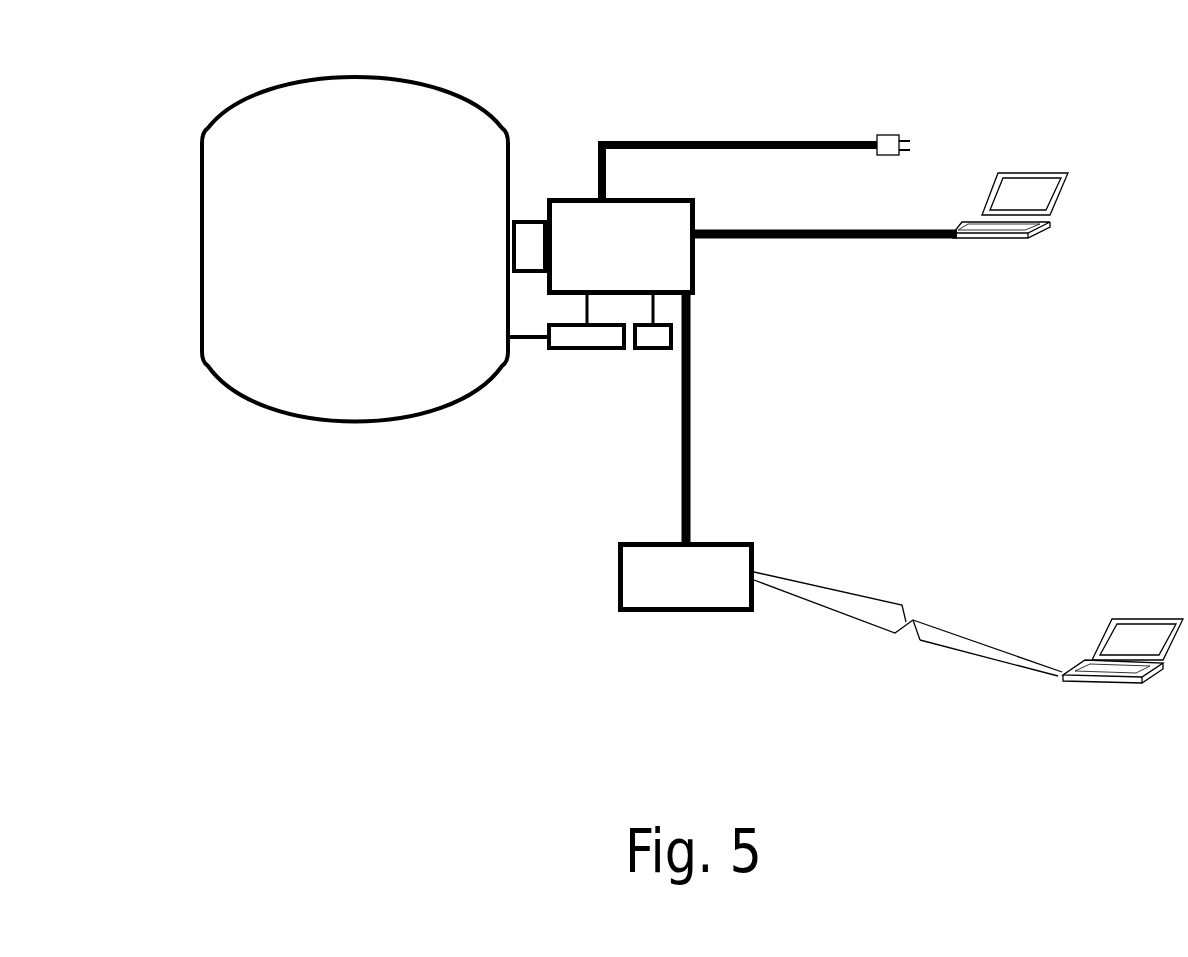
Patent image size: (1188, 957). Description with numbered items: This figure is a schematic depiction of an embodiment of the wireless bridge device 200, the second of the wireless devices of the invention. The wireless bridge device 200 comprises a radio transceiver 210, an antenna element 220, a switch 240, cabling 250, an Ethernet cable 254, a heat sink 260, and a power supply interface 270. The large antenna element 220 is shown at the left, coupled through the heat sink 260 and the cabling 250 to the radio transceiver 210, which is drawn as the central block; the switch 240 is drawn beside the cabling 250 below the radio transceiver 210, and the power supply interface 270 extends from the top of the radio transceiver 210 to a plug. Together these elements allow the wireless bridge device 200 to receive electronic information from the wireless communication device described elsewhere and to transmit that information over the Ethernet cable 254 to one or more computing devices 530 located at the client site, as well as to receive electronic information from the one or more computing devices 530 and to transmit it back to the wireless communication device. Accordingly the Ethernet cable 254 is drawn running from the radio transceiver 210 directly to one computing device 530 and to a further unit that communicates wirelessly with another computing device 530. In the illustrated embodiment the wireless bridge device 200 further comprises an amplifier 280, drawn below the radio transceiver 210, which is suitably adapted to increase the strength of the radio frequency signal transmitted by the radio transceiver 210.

The wireless bridge device 200 is at (960, 128).
The radio transceiver 210 is at (697, 208).
The antenna element 220 is at (352, 424).
The switch 240 is at (653, 352).
The cabling 250 is at (527, 343).
The Ethernet cable 254 is at (796, 241).
The heat sink 260 is at (526, 218).
The power supply interface 270 is at (770, 132).
The amplifier 280 is at (588, 352).
The computing device 530 is at (617, 583).